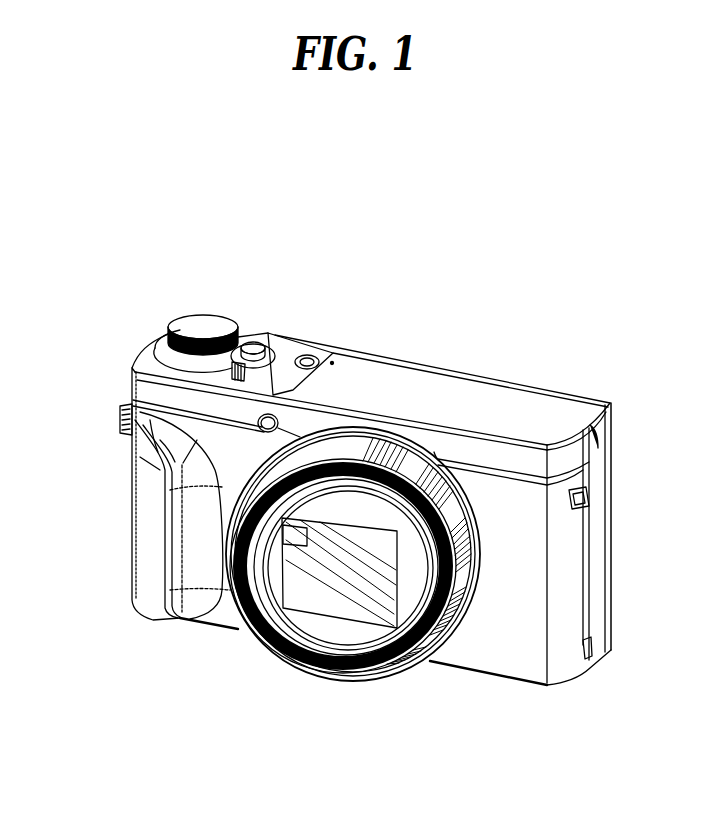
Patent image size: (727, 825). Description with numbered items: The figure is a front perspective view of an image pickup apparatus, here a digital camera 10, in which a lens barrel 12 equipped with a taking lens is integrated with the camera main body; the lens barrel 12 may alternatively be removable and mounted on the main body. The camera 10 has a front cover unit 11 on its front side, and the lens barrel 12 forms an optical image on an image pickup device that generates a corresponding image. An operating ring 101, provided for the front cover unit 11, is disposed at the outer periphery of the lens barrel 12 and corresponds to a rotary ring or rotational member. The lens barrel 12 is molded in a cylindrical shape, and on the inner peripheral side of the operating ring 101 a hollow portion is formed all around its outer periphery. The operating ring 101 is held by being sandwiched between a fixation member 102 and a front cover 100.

The camera 10 is at (508, 382).
The front cover unit 11 is at (130, 503).
The front cover 100 is at (198, 558).
The lens barrel 12 is at (320, 628).
The operating ring 101 is at (462, 587).
The fixation member 102 is at (380, 667).